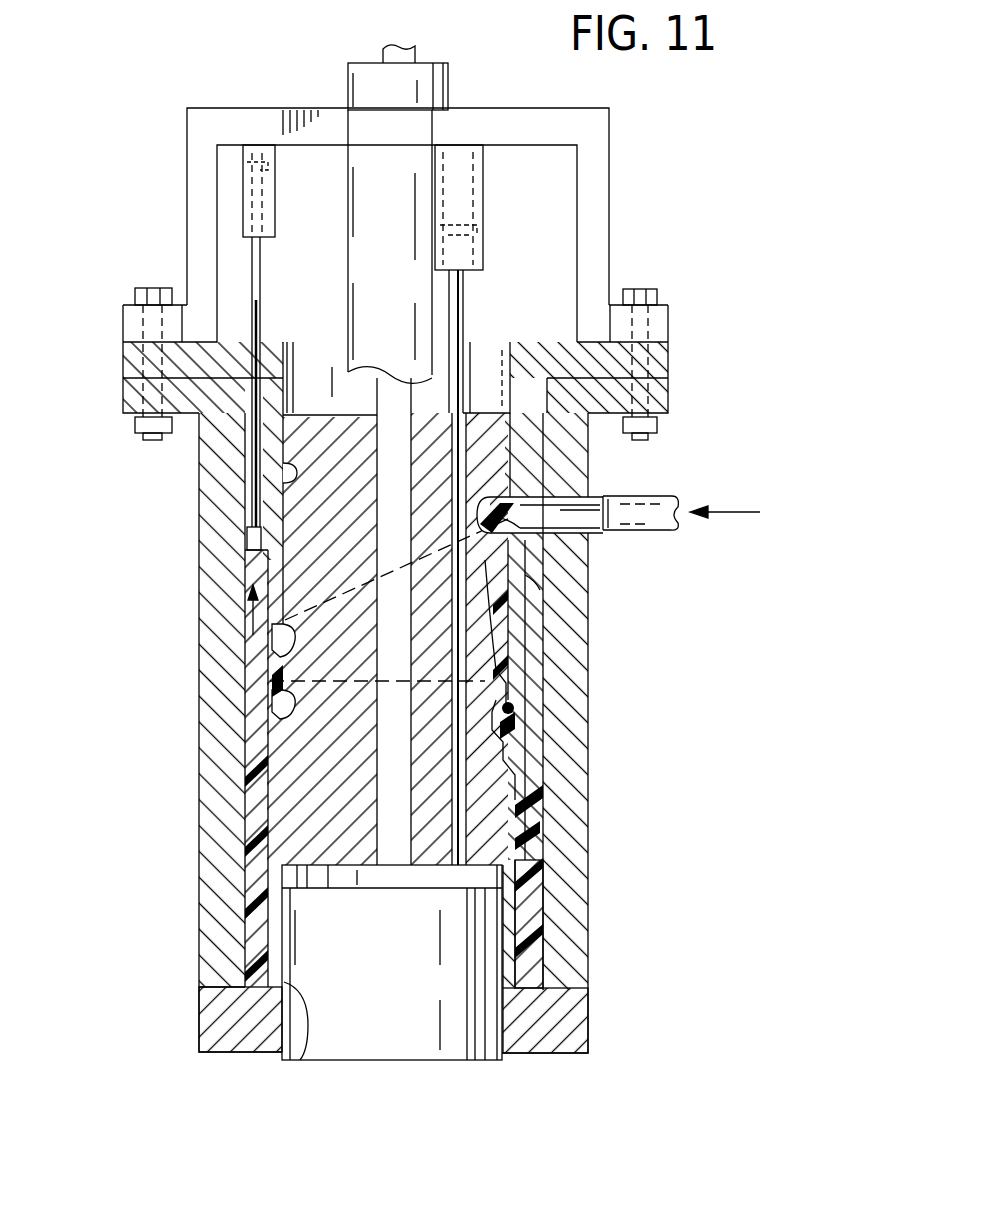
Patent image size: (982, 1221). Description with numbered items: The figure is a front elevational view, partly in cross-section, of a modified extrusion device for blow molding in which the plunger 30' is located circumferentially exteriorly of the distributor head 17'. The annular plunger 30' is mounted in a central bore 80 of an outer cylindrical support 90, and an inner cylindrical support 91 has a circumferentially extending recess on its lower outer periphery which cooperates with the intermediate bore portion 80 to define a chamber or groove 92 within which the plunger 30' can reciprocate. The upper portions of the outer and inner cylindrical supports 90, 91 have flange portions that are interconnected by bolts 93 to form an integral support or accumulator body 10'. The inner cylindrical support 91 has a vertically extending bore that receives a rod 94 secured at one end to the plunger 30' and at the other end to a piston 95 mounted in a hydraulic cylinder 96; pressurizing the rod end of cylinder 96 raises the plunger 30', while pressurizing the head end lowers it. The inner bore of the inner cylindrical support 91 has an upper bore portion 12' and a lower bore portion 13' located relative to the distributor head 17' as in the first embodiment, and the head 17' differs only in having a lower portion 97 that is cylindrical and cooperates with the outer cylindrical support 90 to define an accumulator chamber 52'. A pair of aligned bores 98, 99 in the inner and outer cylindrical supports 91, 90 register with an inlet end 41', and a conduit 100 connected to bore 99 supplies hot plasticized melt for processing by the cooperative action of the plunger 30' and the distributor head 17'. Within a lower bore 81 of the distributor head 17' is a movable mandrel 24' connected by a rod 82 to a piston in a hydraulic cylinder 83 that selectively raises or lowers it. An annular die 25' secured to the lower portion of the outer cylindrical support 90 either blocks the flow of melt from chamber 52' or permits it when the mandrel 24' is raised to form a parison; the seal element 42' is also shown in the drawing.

The accumulator body 10' is at (179, 732).
The upper bore portion 12' is at (217, 485).
The lower bore portion 13' is at (206, 735).
The distributor head 17' is at (595, 847).
The movable mandrel 24' is at (392, 1012).
The annular die 25' is at (406, 1061).
The plunger 30' is at (601, 739).
The inlet end 41' is at (596, 605).
The seal 42' is at (205, 654).
The accumulator chamber 52' is at (589, 923).
The central bore 80 is at (547, 657).
The lower bore 81 is at (307, 1062).
The rod 82 is at (458, 315).
The hydraulic cylinder 83 is at (463, 205).
The outer cylindrical support 90 is at (588, 798).
The inner cylindrical support 91 is at (538, 437).
The chamber or groove 92 is at (533, 543).
The bolts 93 is at (137, 292).
The rod 94 is at (257, 278).
The piston 95 is at (262, 165).
The hydraulic cylinder 96 is at (245, 202).
The lower portion 97 is at (283, 818).
The bore 98 is at (580, 499).
The bore 99 is at (640, 533).
The conduit 100 is at (660, 497).